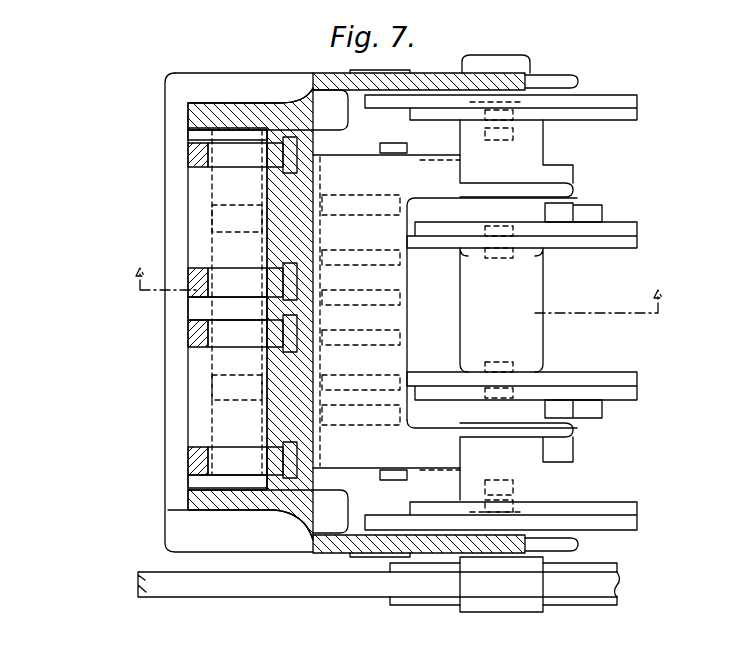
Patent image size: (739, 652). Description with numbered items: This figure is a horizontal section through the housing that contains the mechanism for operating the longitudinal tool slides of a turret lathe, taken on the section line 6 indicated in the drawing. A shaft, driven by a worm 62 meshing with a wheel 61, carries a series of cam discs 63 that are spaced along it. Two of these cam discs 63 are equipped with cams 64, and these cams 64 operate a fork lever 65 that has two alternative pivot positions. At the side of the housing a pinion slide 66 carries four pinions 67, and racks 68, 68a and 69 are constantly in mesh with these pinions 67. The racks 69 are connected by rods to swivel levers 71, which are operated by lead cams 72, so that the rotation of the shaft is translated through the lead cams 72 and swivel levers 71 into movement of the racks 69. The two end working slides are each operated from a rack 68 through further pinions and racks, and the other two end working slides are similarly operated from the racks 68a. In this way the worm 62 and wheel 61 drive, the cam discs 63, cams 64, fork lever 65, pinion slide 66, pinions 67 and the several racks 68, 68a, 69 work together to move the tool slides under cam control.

The wheel 61 is at (600, 585).
The worm 62 is at (478, 600).
The cam discs 63 is at (597, 96).
The cams 64 is at (575, 203).
The fork lever 65 is at (407, 193).
The pinion slide 66 is at (203, 182).
The pinions 67 is at (238, 148).
The racks 68 is at (205, 278).
The racks 68a is at (200, 456).
The racks 69 is at (290, 268).
The swivel levers 71 is at (328, 138).
The lead cams 72 is at (550, 112).
The section line 6 is at (398, 297).